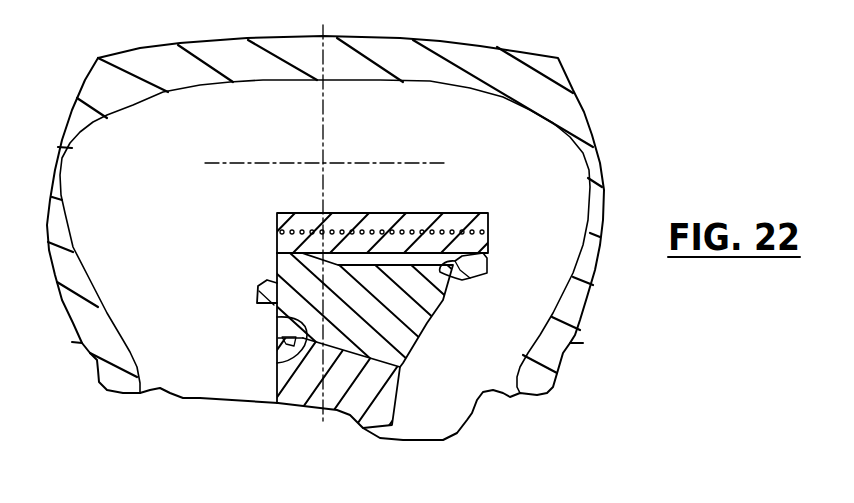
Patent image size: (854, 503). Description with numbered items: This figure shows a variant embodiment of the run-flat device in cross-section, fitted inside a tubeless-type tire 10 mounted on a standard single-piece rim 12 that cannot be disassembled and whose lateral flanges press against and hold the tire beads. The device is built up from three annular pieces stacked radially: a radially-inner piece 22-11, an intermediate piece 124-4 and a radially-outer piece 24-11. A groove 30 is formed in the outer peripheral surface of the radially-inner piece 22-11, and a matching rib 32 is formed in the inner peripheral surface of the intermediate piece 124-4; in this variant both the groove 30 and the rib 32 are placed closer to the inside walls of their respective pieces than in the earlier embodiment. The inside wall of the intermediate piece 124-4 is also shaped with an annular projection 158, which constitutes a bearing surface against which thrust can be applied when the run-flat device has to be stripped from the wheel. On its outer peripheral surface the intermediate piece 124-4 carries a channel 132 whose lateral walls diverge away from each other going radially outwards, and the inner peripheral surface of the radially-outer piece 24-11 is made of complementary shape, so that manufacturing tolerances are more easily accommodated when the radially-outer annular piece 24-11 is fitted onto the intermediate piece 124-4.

The tire 10 is at (584, 122).
The rim 12 is at (199, 398).
The radially-outer piece 24-11 is at (432, 187).
The radially-inner piece 22-11 is at (395, 398).
The intermediate piece 124-4 is at (428, 316).
The channel 132 is at (493, 267).
The annular projection 158 is at (270, 285).
The rib 32 is at (274, 319).
The groove 30 is at (275, 366).